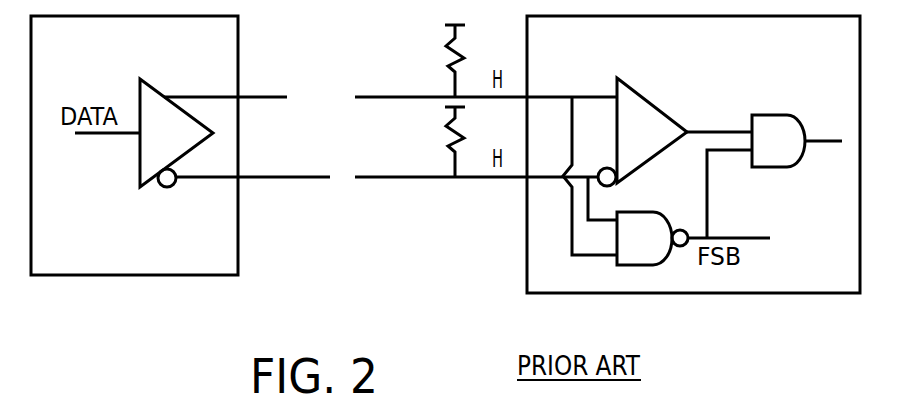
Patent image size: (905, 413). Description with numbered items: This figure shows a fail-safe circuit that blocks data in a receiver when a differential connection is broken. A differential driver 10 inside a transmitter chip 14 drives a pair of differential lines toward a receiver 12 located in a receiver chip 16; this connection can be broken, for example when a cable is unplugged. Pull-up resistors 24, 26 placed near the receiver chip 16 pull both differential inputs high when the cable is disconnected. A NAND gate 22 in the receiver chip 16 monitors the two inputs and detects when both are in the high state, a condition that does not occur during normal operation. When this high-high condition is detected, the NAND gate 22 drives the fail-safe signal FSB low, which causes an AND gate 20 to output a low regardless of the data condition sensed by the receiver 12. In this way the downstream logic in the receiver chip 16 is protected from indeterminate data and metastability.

The transmitter chip 14 is at (67, 58).
The differential driver 10 is at (174, 147).
The pull-up resistor 24 is at (452, 68).
The pull-up resistor 26 is at (452, 148).
The receiver chip 16 is at (835, 58).
The receiver 12 is at (653, 145).
The AND gate 20 is at (787, 155).
The NAND gate 22 is at (653, 253).